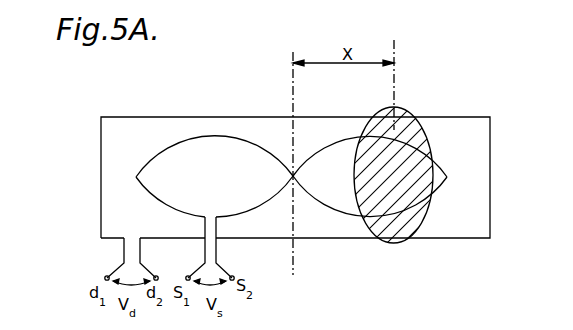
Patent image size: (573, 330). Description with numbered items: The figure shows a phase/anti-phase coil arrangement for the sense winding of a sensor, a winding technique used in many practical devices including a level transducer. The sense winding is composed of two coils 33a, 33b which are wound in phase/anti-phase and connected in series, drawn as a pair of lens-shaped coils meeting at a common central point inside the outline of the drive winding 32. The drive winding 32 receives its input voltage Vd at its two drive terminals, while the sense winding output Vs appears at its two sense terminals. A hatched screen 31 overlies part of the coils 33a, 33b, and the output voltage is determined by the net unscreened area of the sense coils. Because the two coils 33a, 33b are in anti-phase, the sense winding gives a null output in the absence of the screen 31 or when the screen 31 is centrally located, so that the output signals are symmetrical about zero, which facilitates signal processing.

The screen 31 is at (398, 118).
The drive winding 32 is at (437, 239).
The first sense coil 33a is at (166, 149).
The second sense coil 33b is at (419, 213).